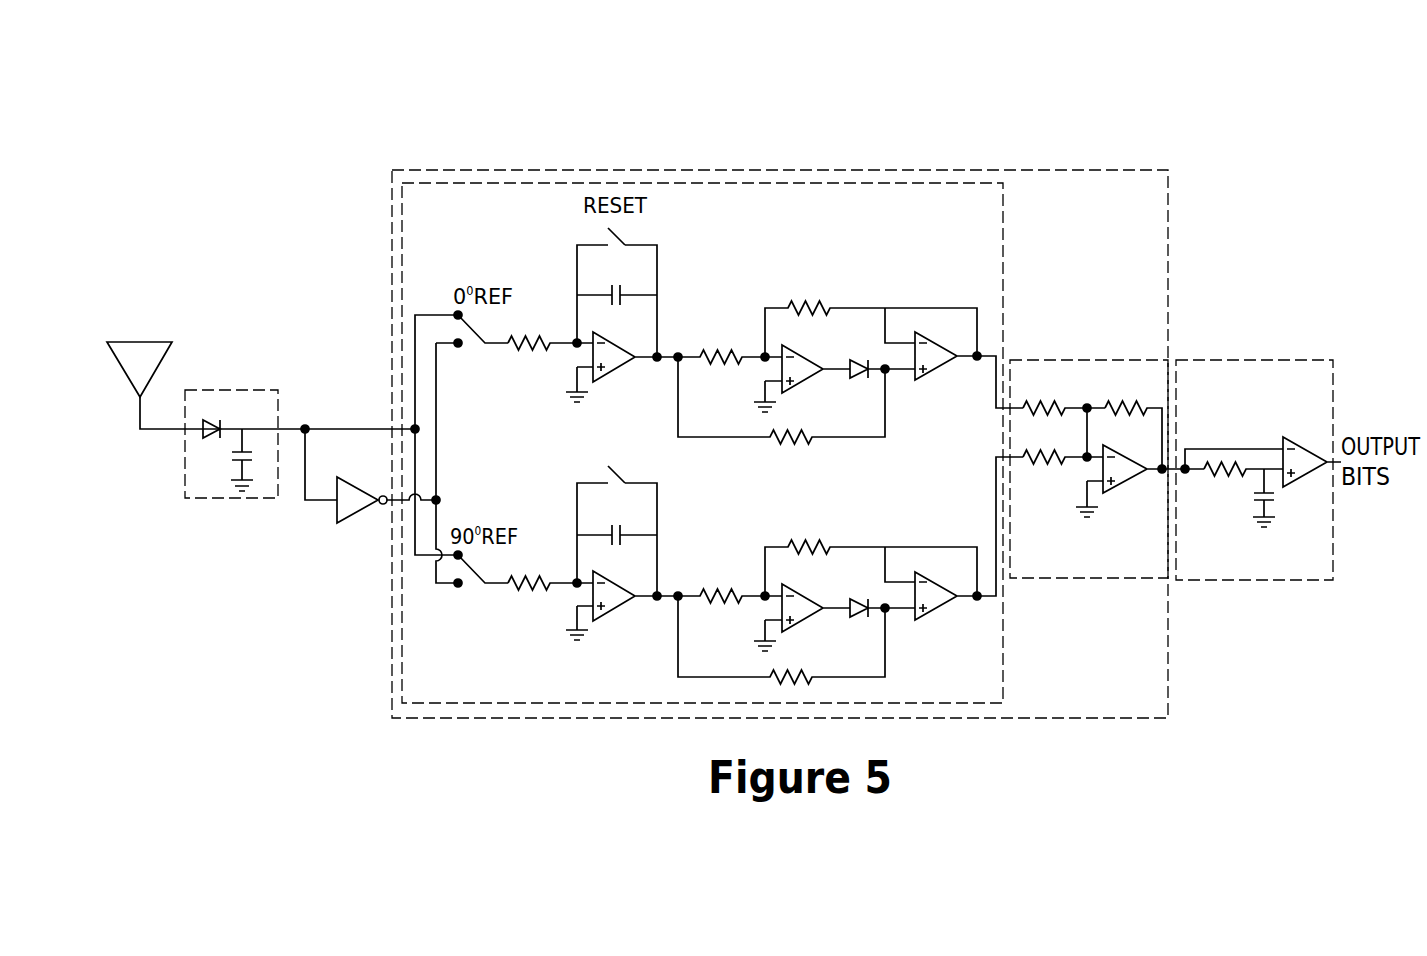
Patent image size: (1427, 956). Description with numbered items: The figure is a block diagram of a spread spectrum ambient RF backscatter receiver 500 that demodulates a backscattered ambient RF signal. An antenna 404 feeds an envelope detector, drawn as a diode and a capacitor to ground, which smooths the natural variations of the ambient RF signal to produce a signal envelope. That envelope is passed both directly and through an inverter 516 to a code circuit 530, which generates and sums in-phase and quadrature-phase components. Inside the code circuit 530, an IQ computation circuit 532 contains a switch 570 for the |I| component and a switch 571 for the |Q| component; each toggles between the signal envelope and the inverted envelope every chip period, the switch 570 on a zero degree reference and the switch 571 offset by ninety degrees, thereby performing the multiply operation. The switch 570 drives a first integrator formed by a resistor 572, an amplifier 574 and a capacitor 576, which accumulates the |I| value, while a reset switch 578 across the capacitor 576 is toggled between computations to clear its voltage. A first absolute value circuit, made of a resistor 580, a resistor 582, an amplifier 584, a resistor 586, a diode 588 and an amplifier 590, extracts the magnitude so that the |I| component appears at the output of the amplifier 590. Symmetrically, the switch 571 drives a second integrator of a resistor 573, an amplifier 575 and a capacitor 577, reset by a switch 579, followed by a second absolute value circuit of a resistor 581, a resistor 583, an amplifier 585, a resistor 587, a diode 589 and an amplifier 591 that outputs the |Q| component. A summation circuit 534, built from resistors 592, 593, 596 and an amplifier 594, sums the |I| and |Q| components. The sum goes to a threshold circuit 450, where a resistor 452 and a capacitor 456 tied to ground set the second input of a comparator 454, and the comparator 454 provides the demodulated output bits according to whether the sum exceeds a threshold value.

The spread spectrum ambient RF backscatter receiver 500 is at (1281, 131).
The antenna 404 is at (148, 340).
The inverter 516 is at (355, 517).
The code circuit 530 is at (573, 170).
The IQ computation circuit 532 is at (450, 182).
The summation circuit 534 is at (1087, 358).
The threshold circuit 450 is at (1250, 358).
The switch 570 is at (470, 353).
The switch 571 is at (470, 593).
The resistor 572 is at (525, 352).
The resistor 573 is at (525, 592).
The amplifier 574 is at (620, 368).
The amplifier 575 is at (620, 607).
The capacitor 576 is at (617, 301).
The capacitor 577 is at (620, 531).
The switch 578 is at (618, 232).
The switch 579 is at (618, 472).
The resistor 580 is at (808, 450).
The resistor 581 is at (775, 672).
The resistor 582 is at (717, 351).
The resistor 583 is at (717, 591).
The amplifier 584 is at (810, 385).
The amplifier 585 is at (810, 624).
The resistor 586 is at (810, 305).
The resistor 587 is at (810, 544).
The diode 588 is at (858, 362).
The diode 589 is at (858, 601).
The amplifier 590 is at (940, 372).
The amplifier 591 is at (940, 612).
The resistor 592 is at (1045, 405).
The resistor 593 is at (1043, 462).
The amplifier 594 is at (1133, 480).
The resistor 596 is at (1128, 405).
The resistor 452 is at (1222, 478).
The comparator 454 is at (1291, 437).
The capacitor 456 is at (1278, 500).